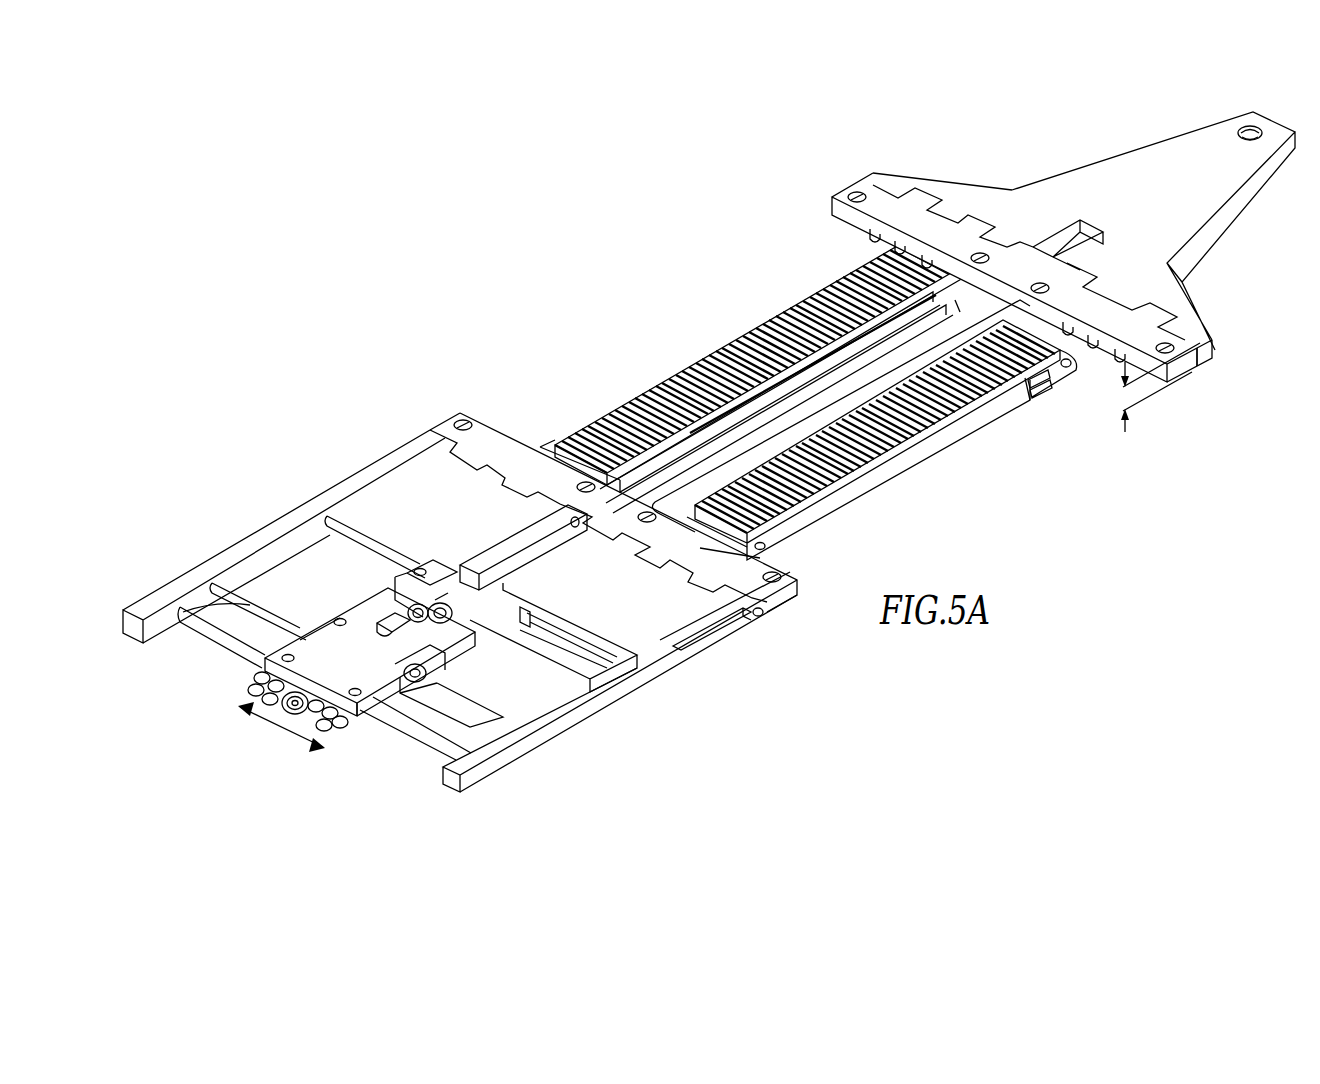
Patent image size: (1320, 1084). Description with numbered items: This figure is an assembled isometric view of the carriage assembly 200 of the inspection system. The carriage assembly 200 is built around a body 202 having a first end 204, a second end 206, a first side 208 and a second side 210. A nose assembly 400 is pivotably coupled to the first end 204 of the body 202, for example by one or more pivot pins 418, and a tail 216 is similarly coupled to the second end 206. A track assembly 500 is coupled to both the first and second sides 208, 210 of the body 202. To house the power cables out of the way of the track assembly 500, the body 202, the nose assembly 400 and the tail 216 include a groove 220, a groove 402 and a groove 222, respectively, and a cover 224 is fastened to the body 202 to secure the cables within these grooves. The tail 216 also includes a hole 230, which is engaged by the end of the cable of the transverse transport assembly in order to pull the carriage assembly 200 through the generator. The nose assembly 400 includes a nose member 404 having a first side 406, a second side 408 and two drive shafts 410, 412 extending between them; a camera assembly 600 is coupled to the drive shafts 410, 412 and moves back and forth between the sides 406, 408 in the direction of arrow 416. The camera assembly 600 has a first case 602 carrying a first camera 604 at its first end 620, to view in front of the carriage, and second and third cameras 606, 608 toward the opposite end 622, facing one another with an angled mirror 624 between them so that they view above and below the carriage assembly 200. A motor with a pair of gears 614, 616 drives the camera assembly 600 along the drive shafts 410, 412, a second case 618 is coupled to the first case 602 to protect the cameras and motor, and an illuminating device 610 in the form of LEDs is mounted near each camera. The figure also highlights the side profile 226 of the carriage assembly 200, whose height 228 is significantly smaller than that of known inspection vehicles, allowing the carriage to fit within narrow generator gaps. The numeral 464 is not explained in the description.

The carriage assembly 200 is at (772, 747).
The body 202 is at (872, 392).
The first end 204 is at (432, 404).
The second end 206 is at (846, 168).
The first side 208 is at (840, 402).
The second side 210 is at (772, 386).
The tail 216 is at (1067, 190).
The groove 220 is at (598, 520).
The groove 222 is at (1060, 240).
The cover 224 is at (952, 312).
The side profile 226 is at (1205, 385).
The height 228 is at (1126, 420).
The hole 230 is at (1243, 126).
The nose assembly 400 is at (742, 664).
The groove 402 is at (545, 545).
The nose member 404 is at (660, 637).
The first side 406 is at (583, 713).
The second side 408 is at (272, 526).
The drive shaft 410 is at (262, 600).
The drive shaft 412 is at (568, 643).
The arrow 416 is at (262, 720).
The pivot pin 418 is at (766, 614).
The slot 464 is at (694, 660).
The track assembly 500 is at (664, 355).
The camera assembly 600 is at (347, 748).
The first case 602 is at (360, 716).
The first camera 604 is at (296, 716).
The second camera 606 is at (375, 634).
The third camera 608 is at (462, 600).
The illuminating device 610 is at (258, 680).
The gear 614 is at (430, 672).
The gear 616 is at (445, 688).
The second case 618 is at (323, 632).
The first end 620 is at (378, 735).
The opposite end 622 is at (412, 550).
The mirror 624 is at (440, 600).